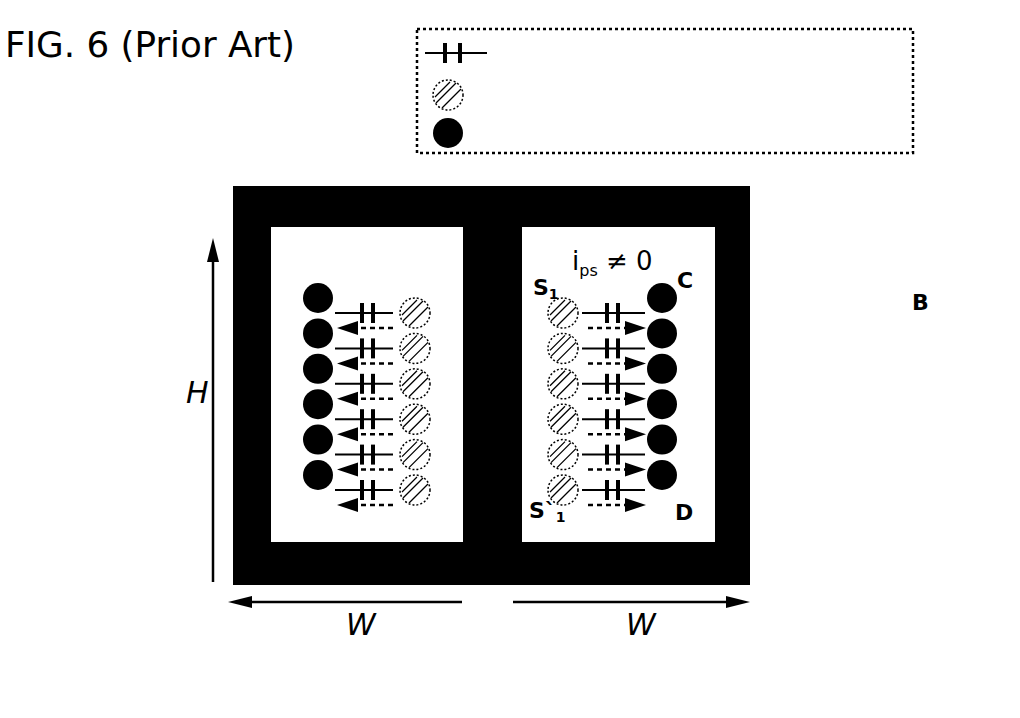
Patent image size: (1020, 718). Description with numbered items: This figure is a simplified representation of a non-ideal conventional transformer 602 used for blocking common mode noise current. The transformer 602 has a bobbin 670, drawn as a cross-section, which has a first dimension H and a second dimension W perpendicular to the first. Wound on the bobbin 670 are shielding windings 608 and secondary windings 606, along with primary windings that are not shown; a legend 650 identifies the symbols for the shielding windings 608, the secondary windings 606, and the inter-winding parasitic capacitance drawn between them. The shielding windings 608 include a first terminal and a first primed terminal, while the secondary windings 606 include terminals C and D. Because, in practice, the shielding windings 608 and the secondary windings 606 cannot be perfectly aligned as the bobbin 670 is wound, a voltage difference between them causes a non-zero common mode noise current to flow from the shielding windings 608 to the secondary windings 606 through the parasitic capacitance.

The non-ideal transformer 602 is at (320, 152).
The secondary windings 606 is at (566, 302).
The shielding windings 608 is at (606, 291).
The legend 650 is at (818, 153).
The bobbin 670 is at (750, 305).